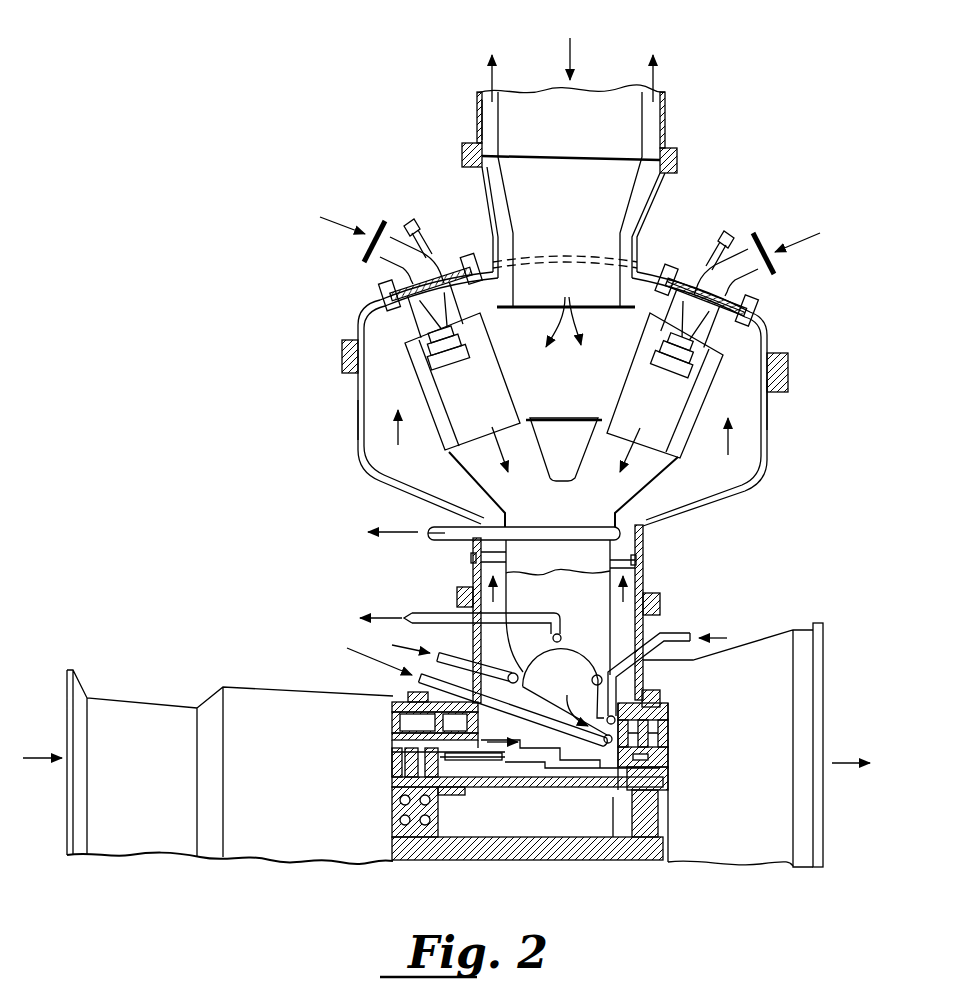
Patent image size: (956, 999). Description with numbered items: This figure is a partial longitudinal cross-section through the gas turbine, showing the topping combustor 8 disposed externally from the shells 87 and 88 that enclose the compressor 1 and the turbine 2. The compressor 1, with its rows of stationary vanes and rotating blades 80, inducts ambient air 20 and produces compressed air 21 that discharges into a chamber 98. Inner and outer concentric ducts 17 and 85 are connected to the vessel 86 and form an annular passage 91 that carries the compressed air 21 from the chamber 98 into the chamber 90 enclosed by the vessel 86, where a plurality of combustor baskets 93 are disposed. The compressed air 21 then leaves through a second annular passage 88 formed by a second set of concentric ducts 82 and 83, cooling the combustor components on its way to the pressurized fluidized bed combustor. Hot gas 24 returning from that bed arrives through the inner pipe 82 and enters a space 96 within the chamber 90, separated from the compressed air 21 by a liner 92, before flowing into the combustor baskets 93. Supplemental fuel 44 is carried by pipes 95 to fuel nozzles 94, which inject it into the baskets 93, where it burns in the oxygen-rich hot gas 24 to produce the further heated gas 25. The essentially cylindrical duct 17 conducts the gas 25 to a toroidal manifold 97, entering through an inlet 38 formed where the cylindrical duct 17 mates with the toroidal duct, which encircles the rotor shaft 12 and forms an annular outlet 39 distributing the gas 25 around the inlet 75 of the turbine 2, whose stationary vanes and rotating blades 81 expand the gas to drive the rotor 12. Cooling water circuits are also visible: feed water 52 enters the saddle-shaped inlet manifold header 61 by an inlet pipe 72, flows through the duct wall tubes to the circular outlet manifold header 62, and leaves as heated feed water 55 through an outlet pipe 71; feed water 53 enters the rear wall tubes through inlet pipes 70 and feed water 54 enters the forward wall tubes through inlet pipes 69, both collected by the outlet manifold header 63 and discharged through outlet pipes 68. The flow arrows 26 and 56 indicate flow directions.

The compressor 1 is at (292, 690).
The turbine 2 is at (737, 643).
The topping combustor 8 is at (768, 457).
The rotor shaft 12 is at (540, 838).
The cylindrical duct 17 is at (527, 602).
The ambient air 20 is at (36, 755).
The compressed air 21 is at (656, 83).
The hot gas 24 is at (572, 46).
The further heated gas 25 is at (631, 459).
The outlet flow 26 is at (838, 760).
The inlet 38 is at (597, 674).
The annular outlet 39 is at (612, 740).
The supplemental fuel 44 is at (334, 222).
The feed water stream 52 is at (396, 640).
The feed water stream 53 is at (724, 632).
The feed water stream 54 is at (345, 646).
The heated feed water 55 is at (385, 533).
The flow arrow 56 is at (390, 614).
The inlet manifold header 61 is at (613, 672).
The outlet manifold header 62 is at (560, 530).
The outlet manifold header 63 is at (558, 633).
The outlet pipes 68 is at (446, 613).
The inlet pipes 69 is at (418, 680).
The inlet pipes 70 is at (670, 633).
The outlet pipe 71 is at (432, 528).
The inlet pipe 72 is at (442, 657).
The turbine inlet 75 is at (613, 797).
The stationary vanes and rotating blades 80 is at (392, 736).
The stationary vanes and rotating blades 81 is at (660, 730).
The inner pipe 82 is at (643, 133).
The outer duct 83 is at (667, 115).
The outer duct 85 is at (643, 578).
The vessel 86 is at (360, 420).
The shell 87 is at (257, 688).
The second annular passage 88 is at (490, 118).
The chamber 90 is at (376, 384).
The annular passage 91 is at (500, 553).
The liner 92 is at (712, 390).
The combustor baskets 93 is at (460, 404).
The fuel nozzles 94 is at (693, 335).
The pipes 95 is at (428, 265).
The space 96 is at (551, 392).
The toroidal manifold 97 is at (529, 677).
The chamber 98 is at (520, 756).